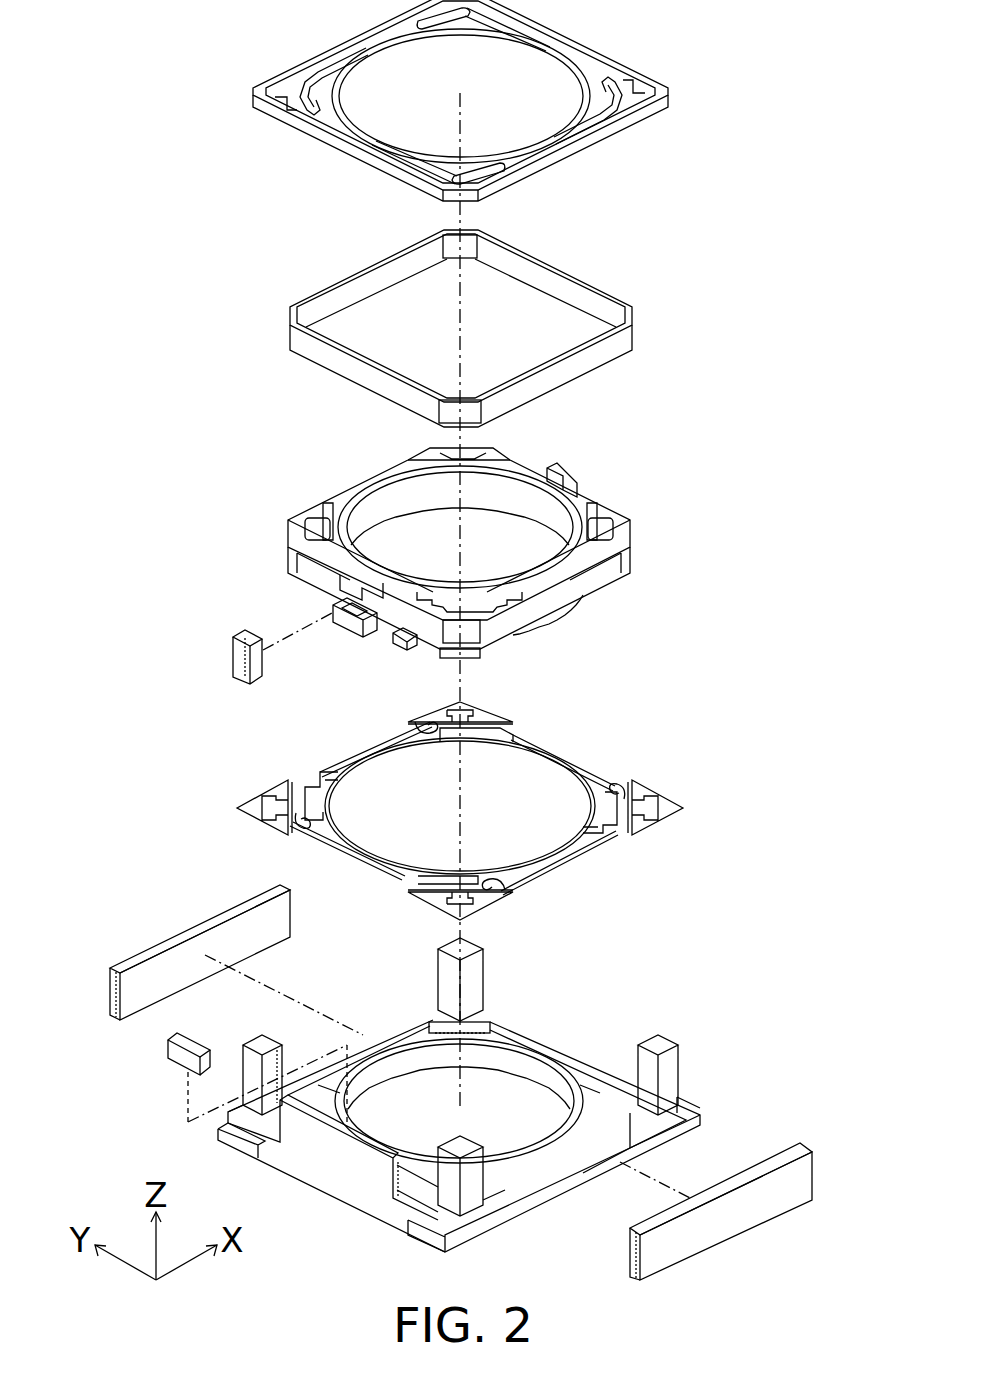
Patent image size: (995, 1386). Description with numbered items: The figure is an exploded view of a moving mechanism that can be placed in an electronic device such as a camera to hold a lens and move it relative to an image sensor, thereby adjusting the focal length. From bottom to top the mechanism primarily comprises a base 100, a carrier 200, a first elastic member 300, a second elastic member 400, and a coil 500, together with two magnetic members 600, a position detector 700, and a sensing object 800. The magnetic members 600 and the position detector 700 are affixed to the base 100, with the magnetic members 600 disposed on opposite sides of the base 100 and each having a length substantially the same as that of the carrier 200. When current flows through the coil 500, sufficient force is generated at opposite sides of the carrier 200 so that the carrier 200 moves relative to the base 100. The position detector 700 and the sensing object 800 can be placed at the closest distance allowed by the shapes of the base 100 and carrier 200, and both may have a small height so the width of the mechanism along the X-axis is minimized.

The base 100 is at (562, 1047).
The carrier 200 is at (296, 533).
The first elastic member 300 is at (278, 793).
The second elastic member 400 is at (254, 94).
The coil 500 is at (290, 312).
The magnetic member 600 is at (150, 955).
The position detector 700 is at (182, 1055).
The sensing object 800 is at (232, 652).